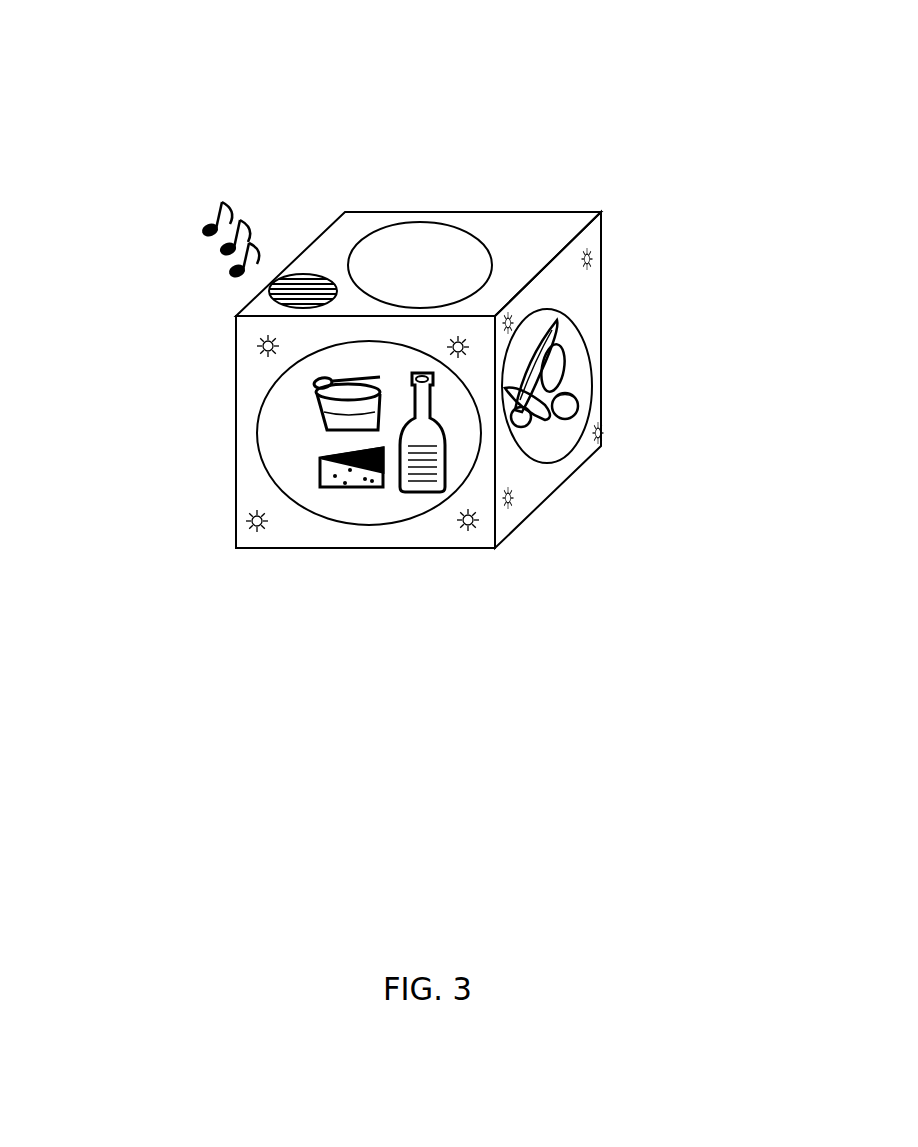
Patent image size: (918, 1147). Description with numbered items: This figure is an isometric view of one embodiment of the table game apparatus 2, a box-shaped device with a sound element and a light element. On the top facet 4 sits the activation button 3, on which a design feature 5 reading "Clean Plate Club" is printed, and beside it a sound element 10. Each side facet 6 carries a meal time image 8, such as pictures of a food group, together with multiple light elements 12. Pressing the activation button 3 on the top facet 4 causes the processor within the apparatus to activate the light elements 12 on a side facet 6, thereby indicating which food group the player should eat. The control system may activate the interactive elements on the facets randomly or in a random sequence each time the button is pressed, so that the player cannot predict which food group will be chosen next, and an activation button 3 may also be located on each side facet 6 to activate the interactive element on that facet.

The table game apparatus 2 is at (492, 117).
The activation button 3 is at (363, 263).
The top facet 4 is at (502, 233).
The design feature 5 is at (430, 237).
The side facet 6 is at (252, 418).
The meal time image 8 is at (328, 435).
The sound element 10 is at (305, 275).
The light element 12 is at (257, 347).